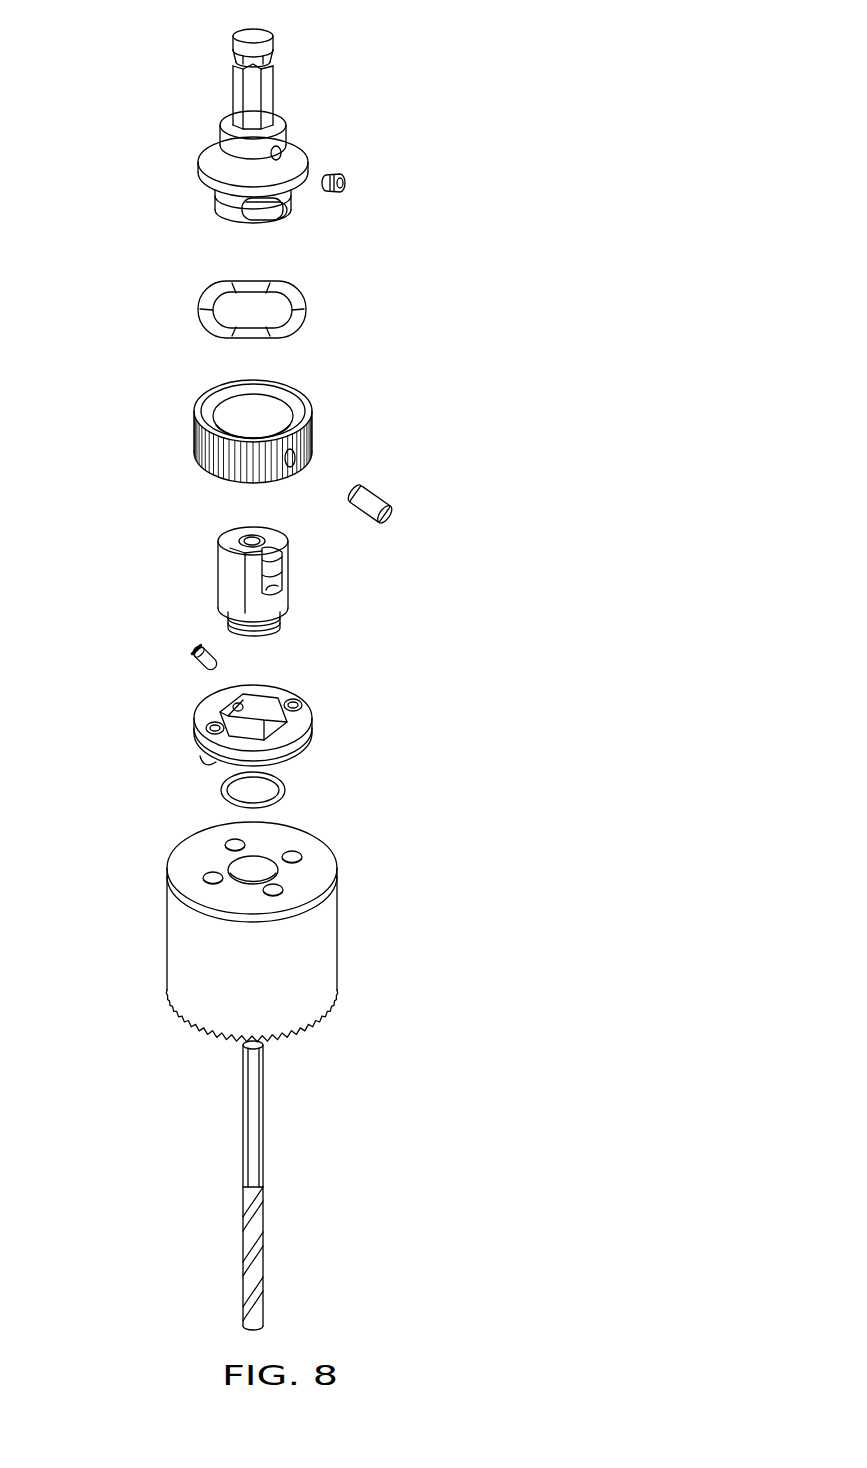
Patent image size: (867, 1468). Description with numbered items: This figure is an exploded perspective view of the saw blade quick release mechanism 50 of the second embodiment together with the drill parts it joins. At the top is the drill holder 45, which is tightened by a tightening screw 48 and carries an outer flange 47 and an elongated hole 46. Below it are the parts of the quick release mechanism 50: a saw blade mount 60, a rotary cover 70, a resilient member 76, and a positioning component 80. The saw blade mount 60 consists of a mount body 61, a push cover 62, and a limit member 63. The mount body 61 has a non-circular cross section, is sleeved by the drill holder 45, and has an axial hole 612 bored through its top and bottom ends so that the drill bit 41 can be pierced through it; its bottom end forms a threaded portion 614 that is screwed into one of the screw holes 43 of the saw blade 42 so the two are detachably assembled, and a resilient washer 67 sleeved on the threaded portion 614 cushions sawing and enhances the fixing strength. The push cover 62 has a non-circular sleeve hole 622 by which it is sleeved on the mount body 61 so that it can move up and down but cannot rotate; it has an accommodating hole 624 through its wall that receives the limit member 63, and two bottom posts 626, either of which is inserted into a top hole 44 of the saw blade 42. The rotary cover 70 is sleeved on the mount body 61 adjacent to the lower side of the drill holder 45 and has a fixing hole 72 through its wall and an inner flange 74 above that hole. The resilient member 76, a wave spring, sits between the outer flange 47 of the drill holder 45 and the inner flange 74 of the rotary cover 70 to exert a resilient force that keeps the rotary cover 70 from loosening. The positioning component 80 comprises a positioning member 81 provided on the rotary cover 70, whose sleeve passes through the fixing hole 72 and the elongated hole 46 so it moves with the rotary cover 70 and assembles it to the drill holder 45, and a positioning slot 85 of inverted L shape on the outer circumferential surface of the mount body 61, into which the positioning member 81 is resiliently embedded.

The drill bit 41 is at (260, 1155).
The saw blade 42 is at (303, 948).
The screw holes 43 is at (262, 873).
The top hole 44 is at (213, 875).
The drill holder 45 is at (297, 73).
The elongated hole 46 is at (253, 210).
The outer flange 47 is at (205, 162).
The tightening screw 48 is at (345, 177).
The saw blade quick release mechanism 50 is at (518, 200).
The saw blade mount 60 is at (88, 538).
The mount body 61 is at (214, 566).
The axial hole 612 is at (250, 540).
The threaded portion 614 is at (280, 626).
The push cover 62 is at (186, 712).
The sleeve hole 622 is at (262, 728).
The accommodating hole 624 is at (272, 700).
The bottom posts 626 is at (205, 760).
The limit member 63 is at (186, 646).
The resilient washer 67 is at (287, 793).
The rotary cover 70 is at (322, 425).
The fixing hole 72 is at (294, 458).
The inner flange 74 is at (290, 412).
The resilient member 76 is at (300, 300).
The positioning component 80 is at (482, 517).
The positioning member 81 is at (389, 513).
The positioning slot 85 is at (288, 574).